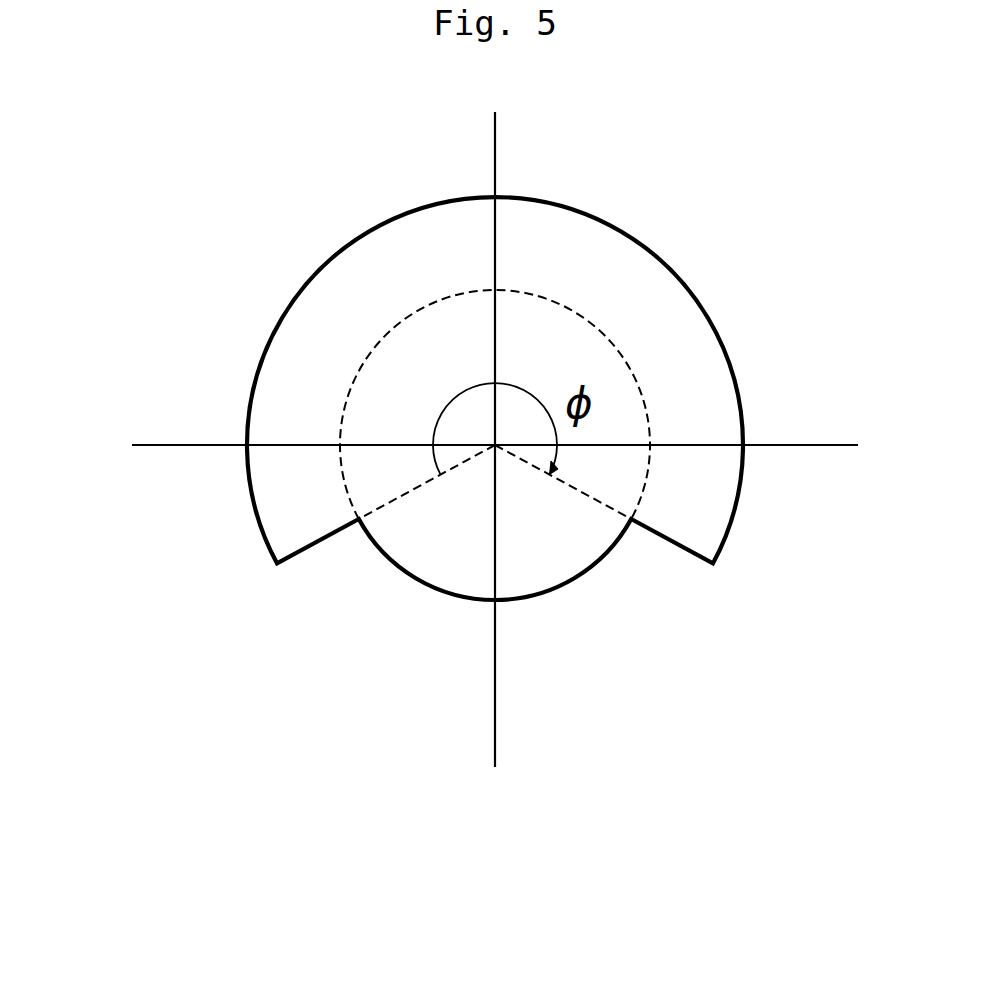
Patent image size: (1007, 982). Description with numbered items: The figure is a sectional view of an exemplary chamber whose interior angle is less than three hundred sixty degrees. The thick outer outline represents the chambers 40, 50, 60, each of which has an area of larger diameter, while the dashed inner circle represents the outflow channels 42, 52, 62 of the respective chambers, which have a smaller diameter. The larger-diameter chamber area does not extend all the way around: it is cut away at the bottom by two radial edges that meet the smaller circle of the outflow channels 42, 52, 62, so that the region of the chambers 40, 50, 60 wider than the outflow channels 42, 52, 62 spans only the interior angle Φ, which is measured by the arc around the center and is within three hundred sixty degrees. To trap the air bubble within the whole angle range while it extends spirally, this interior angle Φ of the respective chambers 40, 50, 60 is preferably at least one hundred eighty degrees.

The chamber 40 is at (594, 398).
The chamber 50 is at (594, 398).
The chamber 60 is at (665, 258).
The outflow channel 42 is at (346, 393).
The outflow channel 52 is at (346, 393).
The outflow channel 62 is at (373, 350).